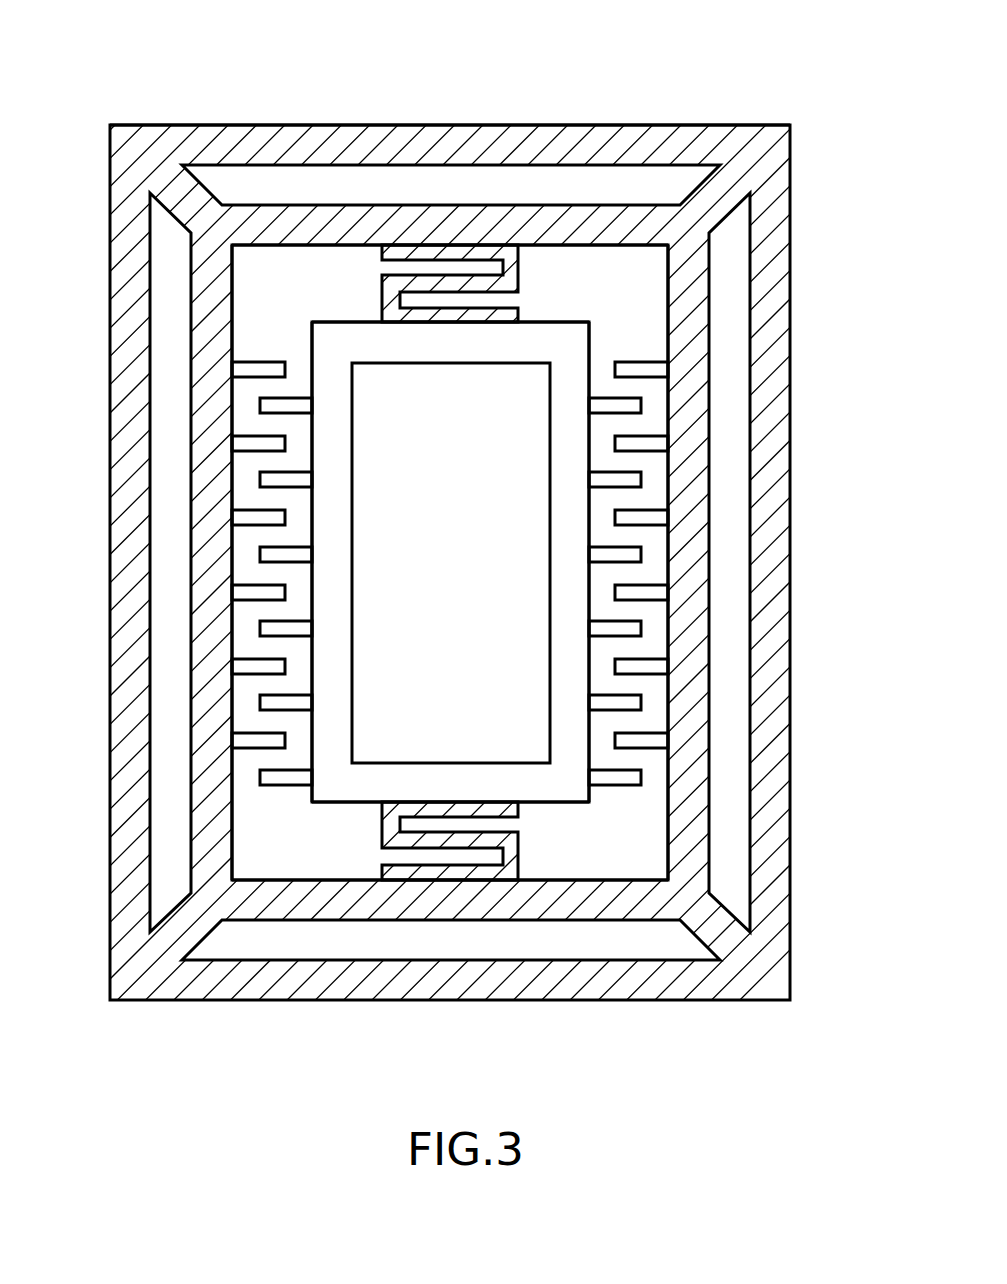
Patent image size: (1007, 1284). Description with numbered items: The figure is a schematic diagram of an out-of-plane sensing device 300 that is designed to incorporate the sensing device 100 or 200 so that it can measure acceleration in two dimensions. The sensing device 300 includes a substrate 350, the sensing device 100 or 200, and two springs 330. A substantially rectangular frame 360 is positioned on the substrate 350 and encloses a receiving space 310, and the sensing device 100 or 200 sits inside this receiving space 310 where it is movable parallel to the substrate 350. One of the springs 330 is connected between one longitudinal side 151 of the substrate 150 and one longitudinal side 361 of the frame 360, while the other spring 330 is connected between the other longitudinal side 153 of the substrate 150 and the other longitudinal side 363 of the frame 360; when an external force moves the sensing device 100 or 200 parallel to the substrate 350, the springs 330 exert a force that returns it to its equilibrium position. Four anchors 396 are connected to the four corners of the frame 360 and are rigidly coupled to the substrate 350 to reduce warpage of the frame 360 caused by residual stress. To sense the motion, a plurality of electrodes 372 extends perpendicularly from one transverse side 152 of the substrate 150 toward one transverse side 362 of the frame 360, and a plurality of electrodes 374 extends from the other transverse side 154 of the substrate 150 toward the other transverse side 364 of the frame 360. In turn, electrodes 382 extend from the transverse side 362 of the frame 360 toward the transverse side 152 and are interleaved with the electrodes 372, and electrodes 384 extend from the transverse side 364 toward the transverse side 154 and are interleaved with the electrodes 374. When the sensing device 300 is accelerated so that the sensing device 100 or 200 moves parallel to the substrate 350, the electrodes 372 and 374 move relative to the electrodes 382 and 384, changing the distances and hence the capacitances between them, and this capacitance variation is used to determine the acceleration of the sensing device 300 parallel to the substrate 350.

The out-of-plane sensing device 300 is at (141, 62).
The sensing device 100 is at (382, 438).
The sensing device 200 is at (328, 310).
The substrate 150 is at (560, 428).
The longitudinal side 151 is at (333, 803).
The transverse side 152 is at (310, 497).
The longitudinal side 153 is at (557, 322).
The transverse side 154 is at (595, 608).
The receiving space 310 is at (640, 280).
The springs 330 is at (455, 245).
The substrate 350 is at (410, 148).
The frame 360 is at (596, 228).
The longitudinal side 361 is at (632, 925).
The transverse side 362 is at (207, 563).
The longitudinal side 363 is at (310, 205).
The transverse side 364 is at (705, 556).
The electrodes 372 is at (270, 405).
The electrodes 374 is at (613, 407).
The electrodes 382 is at (240, 368).
The electrodes 384 is at (655, 370).
The anchors 396 is at (185, 918).